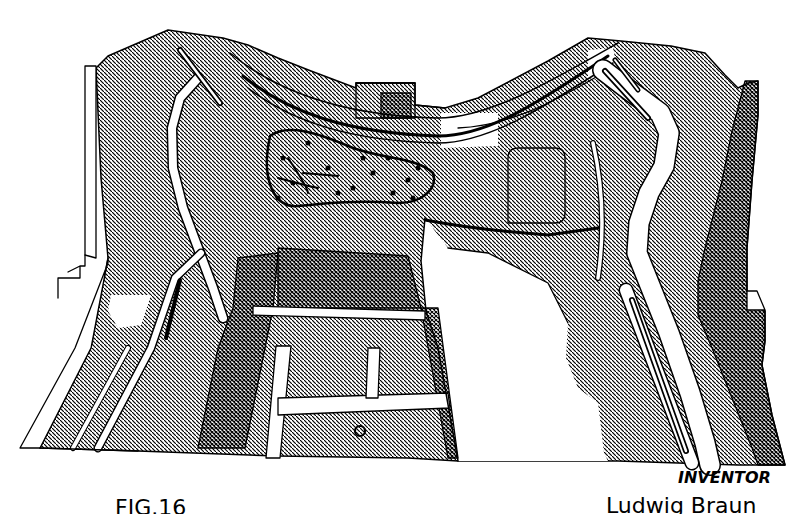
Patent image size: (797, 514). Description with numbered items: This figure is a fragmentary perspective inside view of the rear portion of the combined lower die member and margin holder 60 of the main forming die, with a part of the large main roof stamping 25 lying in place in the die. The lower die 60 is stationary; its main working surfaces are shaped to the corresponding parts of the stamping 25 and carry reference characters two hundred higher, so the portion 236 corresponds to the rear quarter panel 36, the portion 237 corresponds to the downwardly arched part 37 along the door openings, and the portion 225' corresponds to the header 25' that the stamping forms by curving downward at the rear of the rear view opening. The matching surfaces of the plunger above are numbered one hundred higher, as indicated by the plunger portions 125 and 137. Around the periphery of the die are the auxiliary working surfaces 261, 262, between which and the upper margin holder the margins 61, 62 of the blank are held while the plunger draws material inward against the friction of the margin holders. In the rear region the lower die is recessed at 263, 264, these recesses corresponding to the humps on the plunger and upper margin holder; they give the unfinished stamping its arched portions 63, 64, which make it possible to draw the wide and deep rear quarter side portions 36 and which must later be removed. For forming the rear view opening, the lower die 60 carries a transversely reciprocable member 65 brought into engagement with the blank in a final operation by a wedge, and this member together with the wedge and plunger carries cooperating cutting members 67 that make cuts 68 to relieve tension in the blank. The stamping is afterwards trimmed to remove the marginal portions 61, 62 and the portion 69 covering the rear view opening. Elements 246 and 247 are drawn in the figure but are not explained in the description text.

The combined lower die member and margin holder 60 is at (685, 44).
The blank margin 61 is at (673, 368).
The blank margin 62 is at (590, 60).
The arched portion 63 is at (452, 157).
The arched portion 64 is at (453, 110).
The transversely reciprocable member 65 is at (290, 117).
The cutting members 67 is at (300, 110).
The cuts 68 is at (528, 150).
The portion covering the rear view opening 69 is at (467, 140).
The rear quarter panel 36 is at (590, 167).
The downwardly arched portion 37 is at (613, 423).
The main stamping 25 is at (460, 339).
The header of the rear view opening 25' is at (508, 282).
The die portion for the header 225' is at (509, 249).
The plunger working surface 125 is at (453, 12).
The plunger portion for arched door rail 137 is at (540, 12).
The sealing gasket 246 is at (262, 100).
The gasket flange 247 is at (250, 65).
The auxiliary working surface 261 is at (167, 103).
The auxiliary working surface 262 is at (237, 35).
The recess 263 is at (393, 167).
The recess 264 is at (420, 117).
The die portion for rear quarter panel 236 is at (225, 186).
The die portion for arched door rail 237 is at (127, 447).